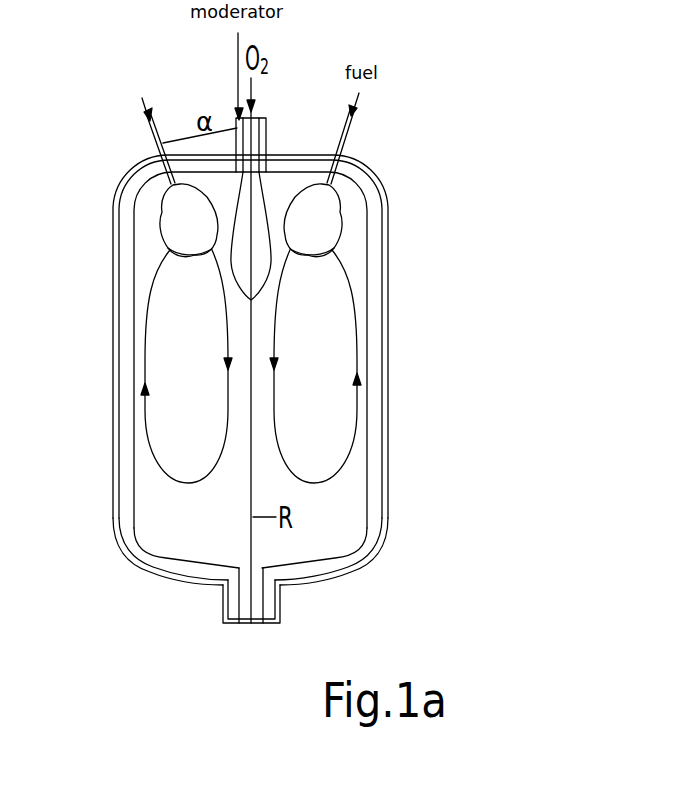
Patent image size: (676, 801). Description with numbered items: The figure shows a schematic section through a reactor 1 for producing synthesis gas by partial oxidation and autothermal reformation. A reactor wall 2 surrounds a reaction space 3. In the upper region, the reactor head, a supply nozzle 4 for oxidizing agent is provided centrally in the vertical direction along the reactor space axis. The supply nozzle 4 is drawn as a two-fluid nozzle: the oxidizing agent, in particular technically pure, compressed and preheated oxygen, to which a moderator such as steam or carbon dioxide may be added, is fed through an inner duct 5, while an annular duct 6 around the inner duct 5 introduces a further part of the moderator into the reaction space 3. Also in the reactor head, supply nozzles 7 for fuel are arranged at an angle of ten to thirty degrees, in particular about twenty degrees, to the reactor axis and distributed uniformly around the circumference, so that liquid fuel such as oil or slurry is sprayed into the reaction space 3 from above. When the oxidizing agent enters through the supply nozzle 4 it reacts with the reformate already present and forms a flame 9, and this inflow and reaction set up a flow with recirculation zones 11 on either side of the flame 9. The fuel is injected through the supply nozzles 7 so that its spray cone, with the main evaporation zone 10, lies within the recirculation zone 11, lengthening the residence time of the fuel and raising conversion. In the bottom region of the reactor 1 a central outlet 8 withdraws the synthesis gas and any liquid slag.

The reactor 1 is at (501, 176).
The reactor wall 2 is at (375, 267).
The reaction space 3 is at (155, 342).
The supply nozzle for oxidizing agent 4 is at (268, 126).
The inner duct 5 is at (255, 145).
The annular duct 6 is at (237, 124).
The supply nozzles for fuel 7 is at (158, 157).
The outlet 8 is at (252, 623).
The flame 9 is at (257, 281).
The main evaporation zone 10 is at (322, 215).
The recirculation zones 11 is at (332, 468).